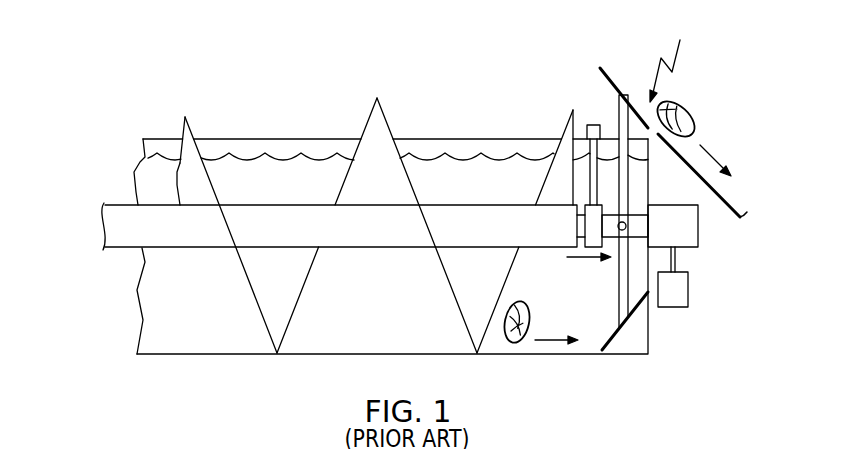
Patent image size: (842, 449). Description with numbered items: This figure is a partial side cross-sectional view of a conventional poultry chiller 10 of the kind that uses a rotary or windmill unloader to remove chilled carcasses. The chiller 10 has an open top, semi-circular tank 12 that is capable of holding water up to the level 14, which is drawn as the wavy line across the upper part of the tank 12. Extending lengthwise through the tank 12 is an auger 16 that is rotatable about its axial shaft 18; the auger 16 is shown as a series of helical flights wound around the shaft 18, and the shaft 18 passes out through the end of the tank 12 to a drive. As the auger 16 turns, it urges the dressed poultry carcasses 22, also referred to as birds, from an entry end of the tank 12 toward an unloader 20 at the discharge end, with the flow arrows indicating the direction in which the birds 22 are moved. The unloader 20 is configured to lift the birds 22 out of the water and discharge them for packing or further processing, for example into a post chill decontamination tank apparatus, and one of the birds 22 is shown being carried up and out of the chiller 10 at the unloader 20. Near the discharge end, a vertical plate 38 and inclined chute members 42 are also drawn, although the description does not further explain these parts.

The chiller 10 is at (123, 146).
The tank 12 is at (226, 138).
The water level 14 is at (296, 153).
The auger 16 is at (297, 305).
The axial shaft 18 is at (293, 204).
The unloader 20 is at (673, 59).
The dressed poultry carcasses 22 is at (699, 131).
The divider plate 38 is at (628, 180).
The chute 42 is at (607, 70).